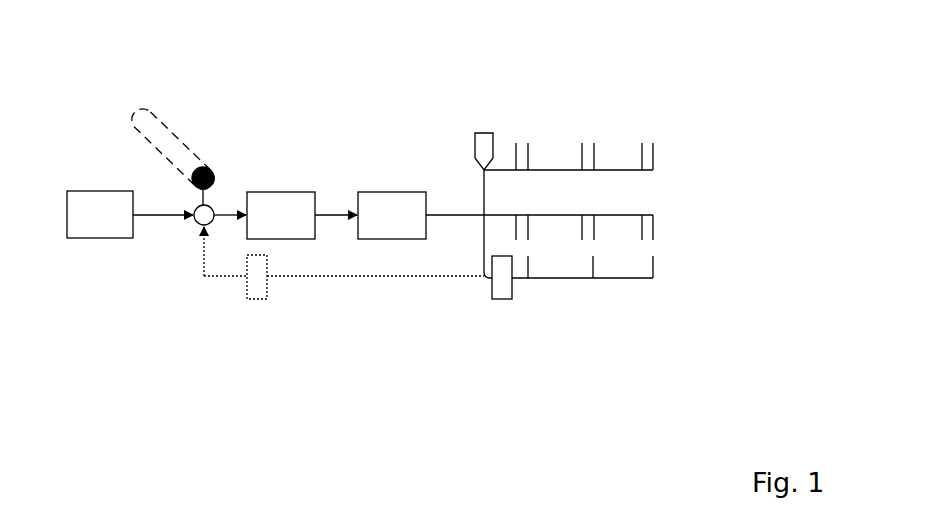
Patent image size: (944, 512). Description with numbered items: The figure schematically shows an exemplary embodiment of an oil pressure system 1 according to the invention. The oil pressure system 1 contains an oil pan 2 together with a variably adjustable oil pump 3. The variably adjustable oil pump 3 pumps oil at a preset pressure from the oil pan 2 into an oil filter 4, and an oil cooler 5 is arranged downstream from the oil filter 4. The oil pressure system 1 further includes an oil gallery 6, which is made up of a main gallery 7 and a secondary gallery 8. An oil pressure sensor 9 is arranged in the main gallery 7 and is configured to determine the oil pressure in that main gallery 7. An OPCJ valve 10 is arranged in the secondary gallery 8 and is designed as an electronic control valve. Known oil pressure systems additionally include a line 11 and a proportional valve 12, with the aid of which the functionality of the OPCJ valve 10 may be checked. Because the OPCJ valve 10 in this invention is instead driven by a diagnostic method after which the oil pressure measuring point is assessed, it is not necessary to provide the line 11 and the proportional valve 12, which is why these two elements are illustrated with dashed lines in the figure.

The oil pressure system 1 is at (370, 83).
The oil pan 2 is at (130, 214).
The variably adjustable oil pump 3 is at (180, 140).
The oil filter 4 is at (302, 215).
The oil cooler 5 is at (392, 215).
The oil gallery 6 is at (596, 199).
The main gallery 7 is at (621, 118).
The secondary gallery 8 is at (611, 302).
The oil pressure sensor 9 is at (484, 133).
The OPCJ valve 10 is at (503, 299).
The line 11 is at (338, 278).
The proportional valve 12 is at (247, 292).